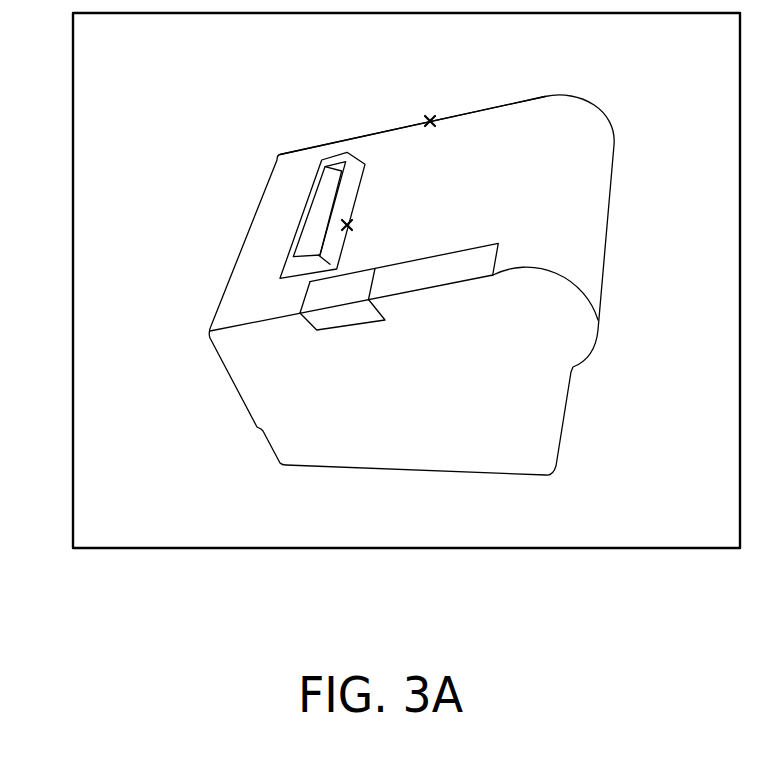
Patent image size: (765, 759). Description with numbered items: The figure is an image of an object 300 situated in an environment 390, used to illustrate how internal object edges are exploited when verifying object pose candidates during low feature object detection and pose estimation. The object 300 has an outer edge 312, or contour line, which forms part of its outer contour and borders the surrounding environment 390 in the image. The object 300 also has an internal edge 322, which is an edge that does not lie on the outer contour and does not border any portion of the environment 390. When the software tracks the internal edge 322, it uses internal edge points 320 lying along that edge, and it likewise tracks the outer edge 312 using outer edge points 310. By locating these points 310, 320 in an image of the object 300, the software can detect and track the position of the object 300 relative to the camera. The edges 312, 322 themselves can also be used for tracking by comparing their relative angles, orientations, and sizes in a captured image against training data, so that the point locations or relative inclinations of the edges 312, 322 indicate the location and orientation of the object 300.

The object 300 is at (268, 440).
The outer edge point 310 is at (430, 118).
The outer edge 312 is at (363, 128).
The internal edge point 320 is at (351, 226).
The internal edge 322 is at (368, 183).
The environment 390 is at (107, 202).